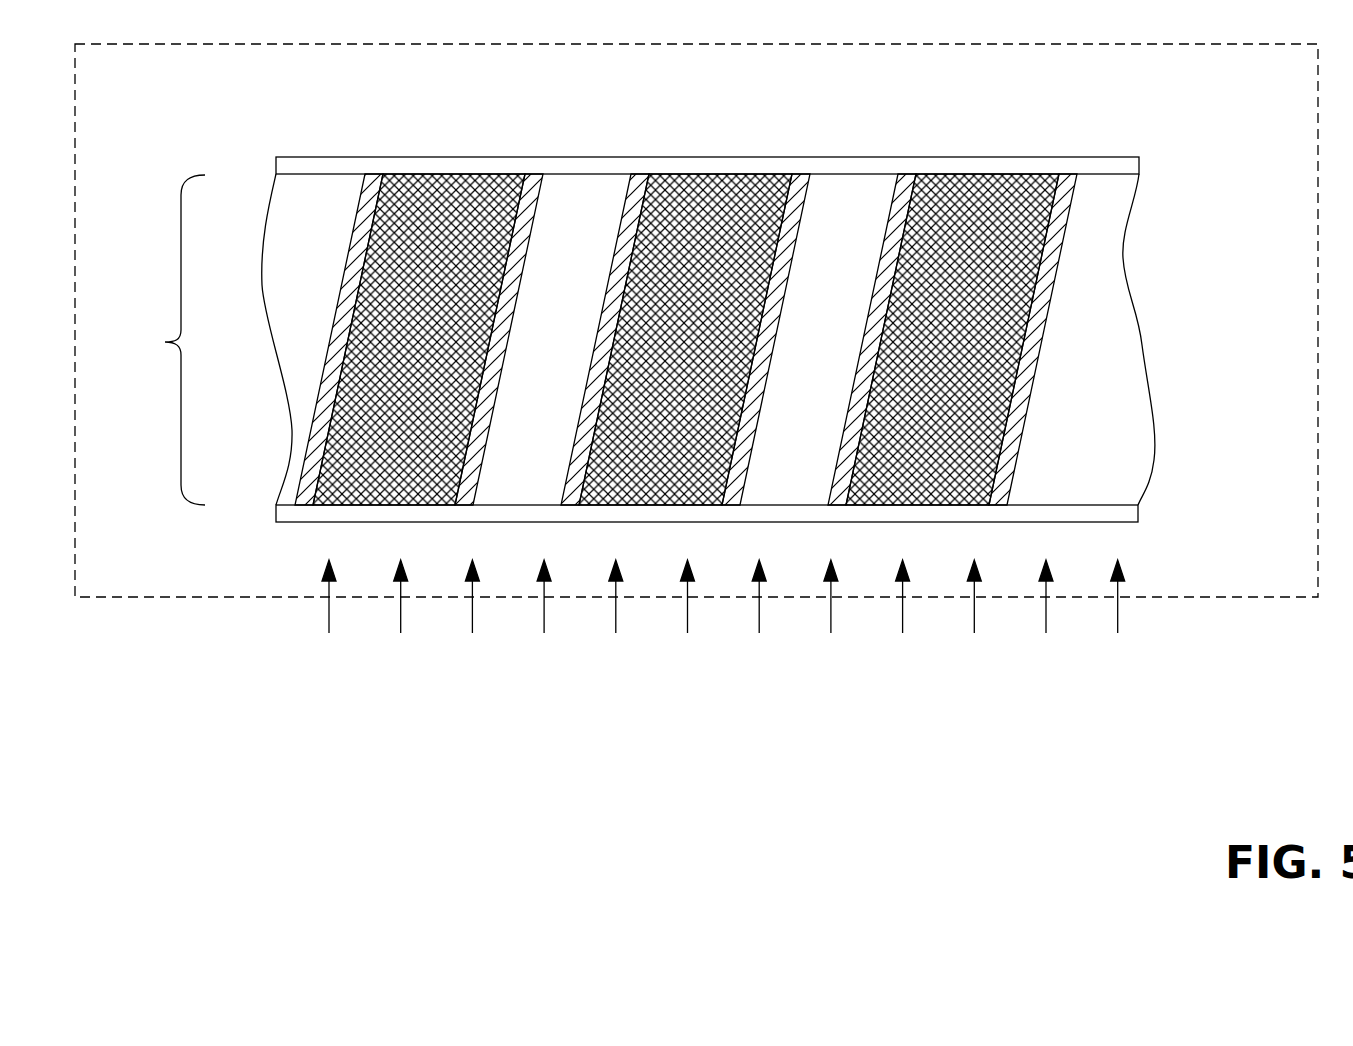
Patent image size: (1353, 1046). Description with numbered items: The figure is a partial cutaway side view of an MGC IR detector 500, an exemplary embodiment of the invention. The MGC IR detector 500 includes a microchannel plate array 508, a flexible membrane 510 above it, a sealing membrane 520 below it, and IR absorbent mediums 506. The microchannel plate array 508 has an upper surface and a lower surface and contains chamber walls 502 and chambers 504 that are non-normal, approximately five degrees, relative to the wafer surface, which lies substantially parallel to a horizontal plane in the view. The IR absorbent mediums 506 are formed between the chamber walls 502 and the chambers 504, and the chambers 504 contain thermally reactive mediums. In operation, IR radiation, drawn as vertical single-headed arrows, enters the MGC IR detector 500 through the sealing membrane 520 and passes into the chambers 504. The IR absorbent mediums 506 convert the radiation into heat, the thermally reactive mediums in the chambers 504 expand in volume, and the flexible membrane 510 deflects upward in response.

The MGC IR detector 500 is at (153, 92).
The chamber walls 502 is at (289, 265).
The chambers 504 is at (447, 288).
The IR absorbent mediums 506 is at (372, 178).
The microchannel plate array 508 is at (165, 342).
The flexible membrane 510 is at (1123, 166).
The sealing membrane 520 is at (1112, 517).